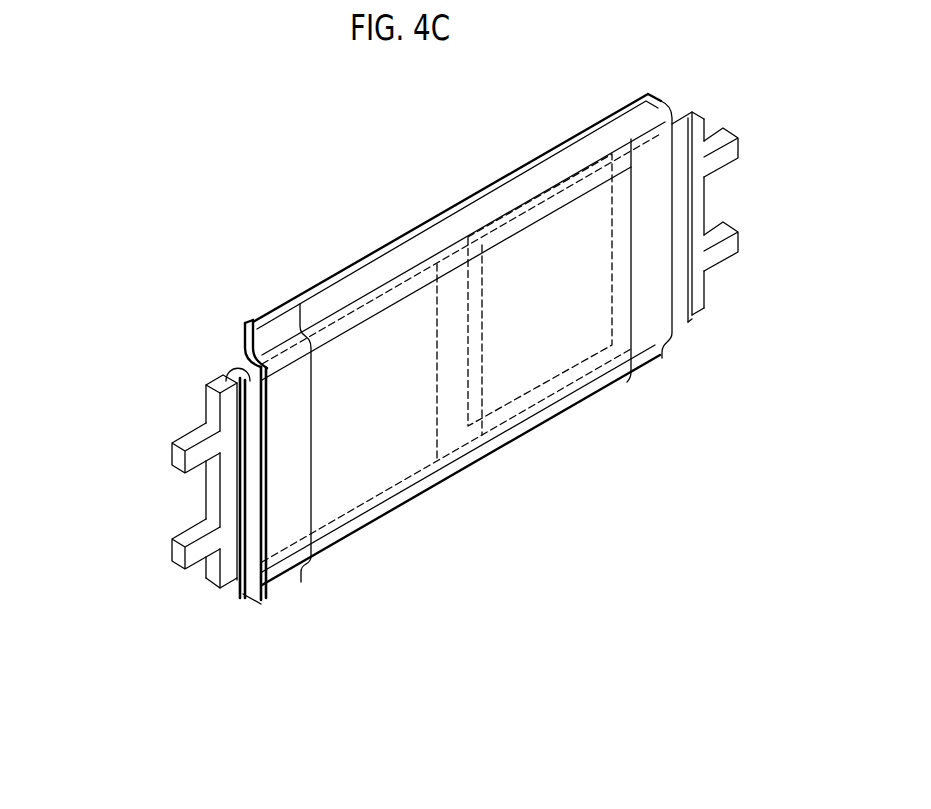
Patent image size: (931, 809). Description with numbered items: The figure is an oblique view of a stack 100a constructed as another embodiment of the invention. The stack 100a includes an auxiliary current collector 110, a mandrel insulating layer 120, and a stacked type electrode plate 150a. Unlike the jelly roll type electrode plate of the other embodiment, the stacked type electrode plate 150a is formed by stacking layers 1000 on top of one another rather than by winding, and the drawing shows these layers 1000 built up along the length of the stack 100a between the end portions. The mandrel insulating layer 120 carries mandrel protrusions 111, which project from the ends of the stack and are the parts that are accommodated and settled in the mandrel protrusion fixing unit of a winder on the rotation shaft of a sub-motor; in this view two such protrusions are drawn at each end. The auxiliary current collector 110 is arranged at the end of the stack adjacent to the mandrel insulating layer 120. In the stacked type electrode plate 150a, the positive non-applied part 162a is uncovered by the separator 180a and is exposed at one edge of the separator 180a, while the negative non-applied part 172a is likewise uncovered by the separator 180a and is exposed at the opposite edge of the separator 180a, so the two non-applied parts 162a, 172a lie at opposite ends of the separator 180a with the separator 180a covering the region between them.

The stack 100a is at (316, 166).
The layers 1000 is at (234, 314).
The auxiliary current collector 110 is at (228, 400).
The mandrel protrusions 111 is at (175, 549).
The mandrel insulating layer 120 is at (253, 552).
The stacked type electrode plate 150a is at (733, 455).
The positive non-applied part 162a is at (293, 503).
The negative non-applied part 172a is at (647, 350).
The separator 180a is at (463, 453).